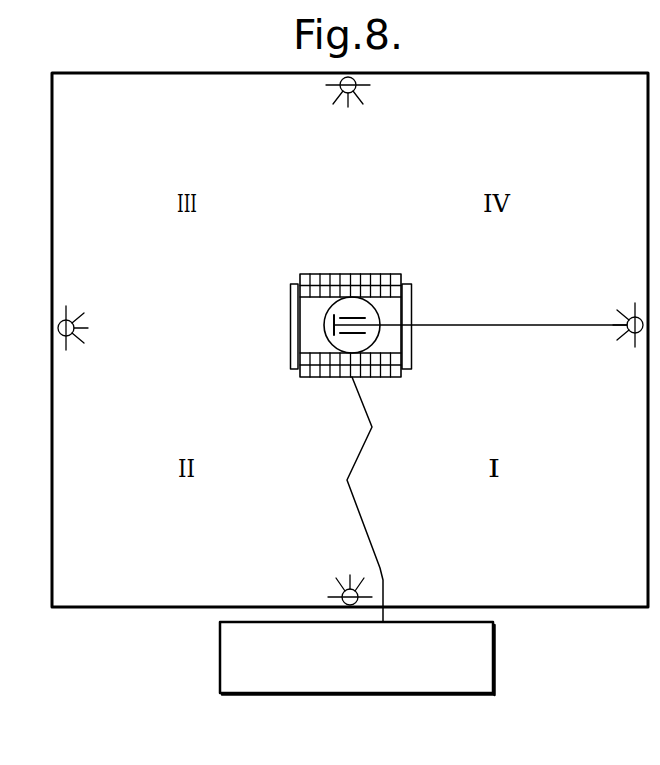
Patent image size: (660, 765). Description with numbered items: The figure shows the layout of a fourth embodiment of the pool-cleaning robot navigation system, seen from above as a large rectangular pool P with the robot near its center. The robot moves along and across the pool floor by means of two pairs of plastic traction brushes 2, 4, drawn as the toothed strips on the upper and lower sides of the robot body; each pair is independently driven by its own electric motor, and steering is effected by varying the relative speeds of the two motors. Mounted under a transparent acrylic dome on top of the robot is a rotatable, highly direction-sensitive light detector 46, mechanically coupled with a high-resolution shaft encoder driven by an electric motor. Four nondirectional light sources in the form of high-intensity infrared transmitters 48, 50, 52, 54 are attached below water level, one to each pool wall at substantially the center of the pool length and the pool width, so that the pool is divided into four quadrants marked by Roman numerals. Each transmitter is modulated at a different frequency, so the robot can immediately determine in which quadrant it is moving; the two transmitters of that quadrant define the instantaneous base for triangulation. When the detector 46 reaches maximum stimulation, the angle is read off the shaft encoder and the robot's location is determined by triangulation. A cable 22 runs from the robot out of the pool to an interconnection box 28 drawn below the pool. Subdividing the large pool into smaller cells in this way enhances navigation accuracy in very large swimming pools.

The panel P is at (52, 197).
The traction brush 2 is at (378, 280).
The traction brush 4 is at (325, 278).
The wire 22 is at (365, 527).
The interconnection box 28 is at (495, 648).
The light detector 46 is at (333, 325).
The infrared transmitter 48 is at (627, 312).
The infrared transmitter 50 is at (340, 590).
The infrared transmitter 52 is at (68, 347).
The infrared transmitter 54 is at (337, 91).